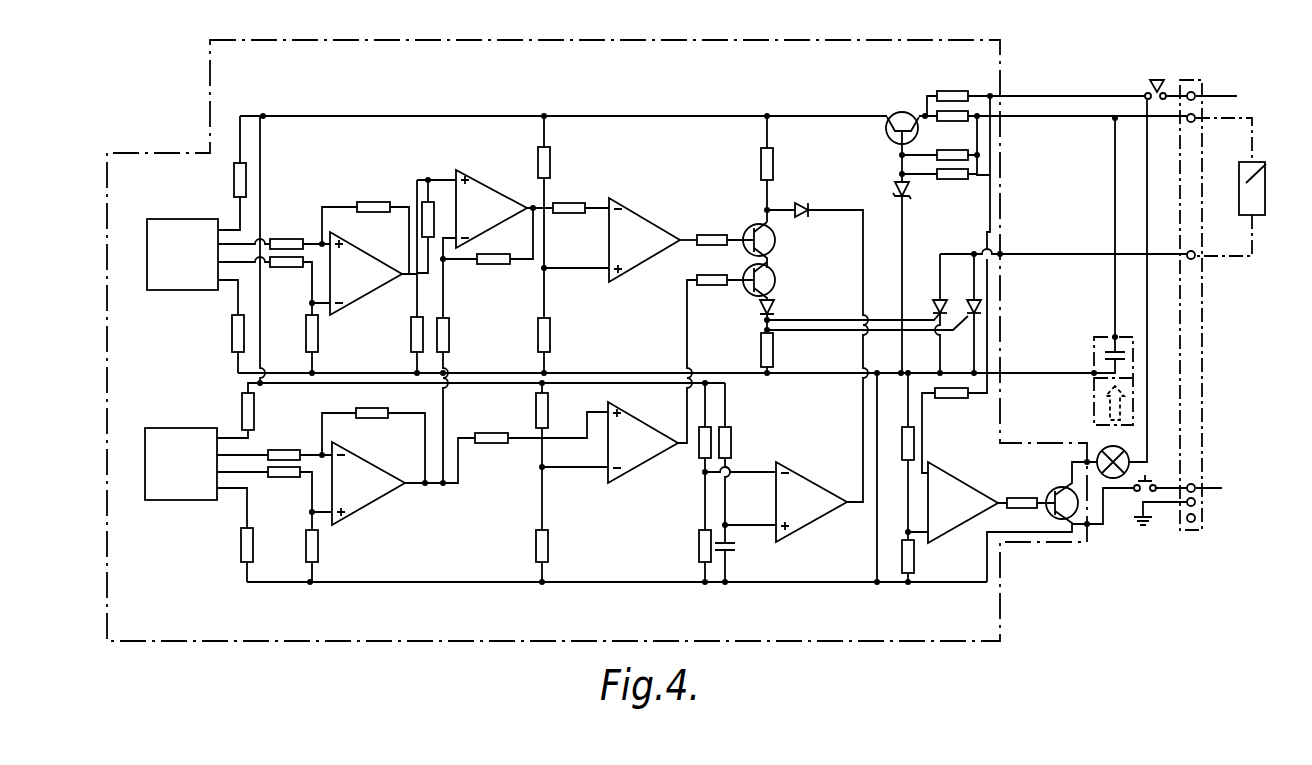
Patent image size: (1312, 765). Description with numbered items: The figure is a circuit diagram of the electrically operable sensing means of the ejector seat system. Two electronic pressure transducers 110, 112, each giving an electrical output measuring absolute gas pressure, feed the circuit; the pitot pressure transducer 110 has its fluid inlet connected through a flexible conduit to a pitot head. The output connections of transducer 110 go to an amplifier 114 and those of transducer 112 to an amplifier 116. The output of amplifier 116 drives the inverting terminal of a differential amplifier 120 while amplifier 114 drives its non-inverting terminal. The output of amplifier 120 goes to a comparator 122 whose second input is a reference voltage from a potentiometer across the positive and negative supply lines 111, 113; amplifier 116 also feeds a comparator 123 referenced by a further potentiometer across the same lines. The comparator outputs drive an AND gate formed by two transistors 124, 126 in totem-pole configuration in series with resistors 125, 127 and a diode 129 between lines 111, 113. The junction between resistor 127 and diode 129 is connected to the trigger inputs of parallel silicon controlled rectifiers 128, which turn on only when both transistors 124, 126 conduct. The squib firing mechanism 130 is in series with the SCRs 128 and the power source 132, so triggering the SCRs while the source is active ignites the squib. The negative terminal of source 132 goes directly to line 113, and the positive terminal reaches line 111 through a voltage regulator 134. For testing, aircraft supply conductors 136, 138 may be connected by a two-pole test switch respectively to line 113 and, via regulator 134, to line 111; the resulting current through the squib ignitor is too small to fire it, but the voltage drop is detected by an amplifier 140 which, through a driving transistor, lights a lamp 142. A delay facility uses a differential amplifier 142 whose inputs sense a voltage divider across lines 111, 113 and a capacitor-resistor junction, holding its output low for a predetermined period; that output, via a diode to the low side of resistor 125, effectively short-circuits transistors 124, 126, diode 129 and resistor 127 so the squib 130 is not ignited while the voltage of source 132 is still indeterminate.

The pitot pressure transducer 110 is at (178, 276).
The positive power supply line 111 is at (426, 116).
The pressure transducer 112 is at (177, 488).
The negative power supply line 113 is at (560, 372).
The amplifier 114 is at (358, 288).
The amplifier 116 is at (368, 495).
The differential amplifier 120 is at (485, 192).
The comparator 122 is at (640, 222).
The comparator 123 is at (638, 455).
The transistor 124 is at (778, 244).
The resistor 125 is at (775, 170).
The transistor 126 is at (777, 278).
The resistor 127 is at (772, 350).
The silicon controlled rectifiers 128 is at (968, 306).
The diode 129 is at (773, 313).
The squib firing mechanism 130 is at (1270, 164).
The power source 132 is at (1094, 340).
The voltage regulator 134 is at (893, 112).
The aircraft power supply conductor 136 is at (1212, 488).
The aircraft power supply conductor 138 is at (1225, 97).
The amplifier 140 is at (955, 488).
The lamp / differential amplifier 142 is at (804, 488).